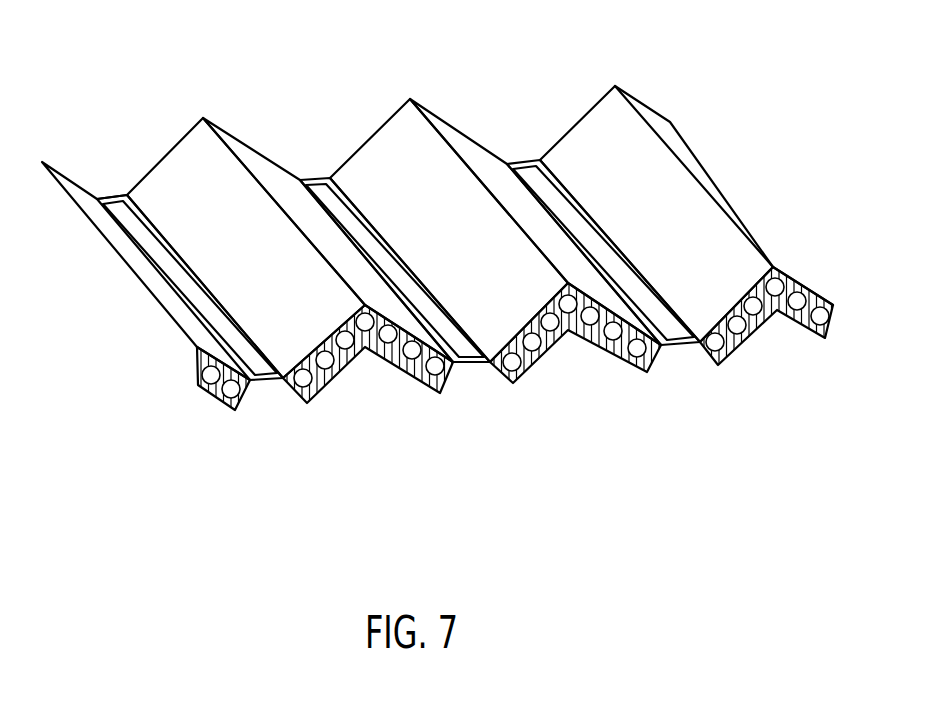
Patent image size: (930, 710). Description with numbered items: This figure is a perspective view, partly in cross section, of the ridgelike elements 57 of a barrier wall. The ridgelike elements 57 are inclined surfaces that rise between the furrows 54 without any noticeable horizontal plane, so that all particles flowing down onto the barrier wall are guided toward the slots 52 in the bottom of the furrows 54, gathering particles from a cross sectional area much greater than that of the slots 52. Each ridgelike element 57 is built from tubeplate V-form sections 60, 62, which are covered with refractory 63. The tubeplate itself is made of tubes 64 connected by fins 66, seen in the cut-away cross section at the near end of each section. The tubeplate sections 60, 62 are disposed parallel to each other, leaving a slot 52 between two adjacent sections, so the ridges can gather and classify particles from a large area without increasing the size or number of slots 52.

The slot 52 is at (330, 200).
The furrow 54 is at (511, 138).
The ridgelike element 57 is at (167, 195).
The tubeplate V-form section 60 is at (208, 92).
The tubeplate V-form section 62 is at (422, 72).
The refractory 63 is at (777, 267).
The tube 64 is at (718, 350).
The fin 66 is at (743, 340).